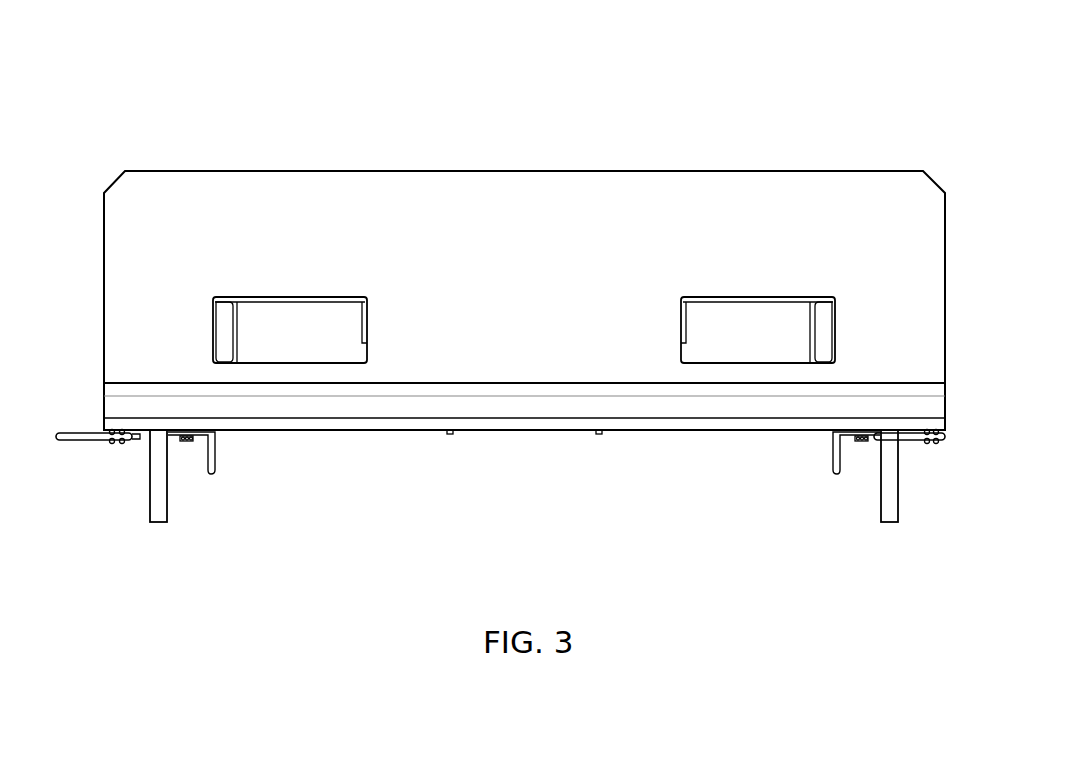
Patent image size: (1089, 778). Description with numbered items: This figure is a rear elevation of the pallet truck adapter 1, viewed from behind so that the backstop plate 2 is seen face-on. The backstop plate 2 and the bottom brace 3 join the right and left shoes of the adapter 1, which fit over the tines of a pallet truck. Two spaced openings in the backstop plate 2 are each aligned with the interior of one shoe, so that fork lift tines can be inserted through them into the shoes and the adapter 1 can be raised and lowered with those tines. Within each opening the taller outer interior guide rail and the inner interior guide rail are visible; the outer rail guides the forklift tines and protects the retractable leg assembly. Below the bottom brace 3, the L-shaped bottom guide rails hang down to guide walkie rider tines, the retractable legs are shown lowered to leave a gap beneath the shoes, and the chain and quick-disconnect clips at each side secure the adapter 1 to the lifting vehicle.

The pallet truck adapter 1 is at (1005, 136).
The backstop plate 2 is at (531, 234).
The bottom brace 3 is at (419, 407).